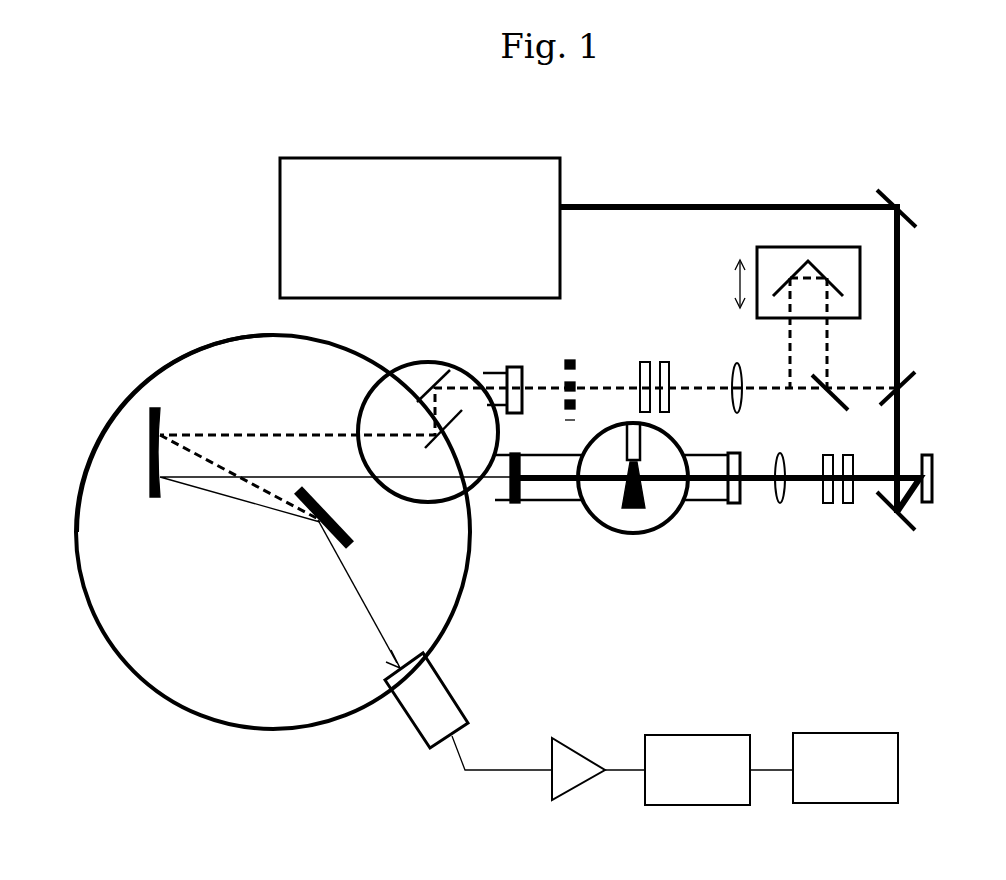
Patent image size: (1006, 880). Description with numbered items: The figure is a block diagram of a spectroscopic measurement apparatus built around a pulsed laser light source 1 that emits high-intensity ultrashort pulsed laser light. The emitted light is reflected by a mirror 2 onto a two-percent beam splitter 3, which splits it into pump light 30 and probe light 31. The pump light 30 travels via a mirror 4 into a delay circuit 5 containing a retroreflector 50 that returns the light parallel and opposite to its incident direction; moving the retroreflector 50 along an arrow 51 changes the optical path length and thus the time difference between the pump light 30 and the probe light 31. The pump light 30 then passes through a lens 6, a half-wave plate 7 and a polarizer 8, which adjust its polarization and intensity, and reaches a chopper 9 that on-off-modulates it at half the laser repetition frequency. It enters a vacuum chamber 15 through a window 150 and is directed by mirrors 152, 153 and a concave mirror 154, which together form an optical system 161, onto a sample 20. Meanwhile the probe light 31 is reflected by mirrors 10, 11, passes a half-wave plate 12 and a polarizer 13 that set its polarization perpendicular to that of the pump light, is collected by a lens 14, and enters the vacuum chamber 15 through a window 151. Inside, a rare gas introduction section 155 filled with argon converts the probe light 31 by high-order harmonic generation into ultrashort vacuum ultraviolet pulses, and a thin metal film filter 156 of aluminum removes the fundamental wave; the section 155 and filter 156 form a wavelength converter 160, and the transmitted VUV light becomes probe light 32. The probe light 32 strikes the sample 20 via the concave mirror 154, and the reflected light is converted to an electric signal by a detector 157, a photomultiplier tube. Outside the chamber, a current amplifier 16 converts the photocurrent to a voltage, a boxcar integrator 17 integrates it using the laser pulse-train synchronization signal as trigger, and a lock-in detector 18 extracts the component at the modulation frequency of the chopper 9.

The pulsed laser light source 1 is at (385, 157).
The mirror 2 is at (890, 197).
The 2% beam splitter 3 is at (912, 376).
The mirror 4 is at (838, 407).
The delay circuit 5 is at (780, 246).
The lens 6 is at (742, 405).
The half-wave plate 7 is at (669, 365).
The polarizer 8 is at (645, 360).
The chopper 9 is at (572, 355).
The mirror 10 is at (915, 530).
The mirror 11 is at (930, 452).
The half-wave plate 12 is at (850, 505).
The polarizer 13 is at (828, 505).
The lens 14 is at (783, 505).
The vacuum chamber 15 is at (165, 368).
The current amplifier 16 is at (575, 745).
The boxcar integrator 17 is at (678, 733).
The lock-in detector 18 is at (820, 732).
The sample 20 is at (340, 533).
The pump light 30 is at (847, 385).
The probe light 31 is at (901, 425).
The probe light 32 is at (270, 475).
The retroreflector 50 is at (818, 272).
The arrow 51 is at (733, 290).
The window 150 is at (515, 362).
The window 151 is at (735, 505).
The mirror 152 is at (425, 395).
The mirror 153 is at (455, 420).
The concave mirror 154 is at (160, 410).
The rare gas introduction section 155 is at (632, 536).
The thin metal film filter 156 is at (522, 498).
The detector 157 is at (450, 690).
The wavelength converter 160 is at (605, 568).
The optical system 161 is at (135, 448).